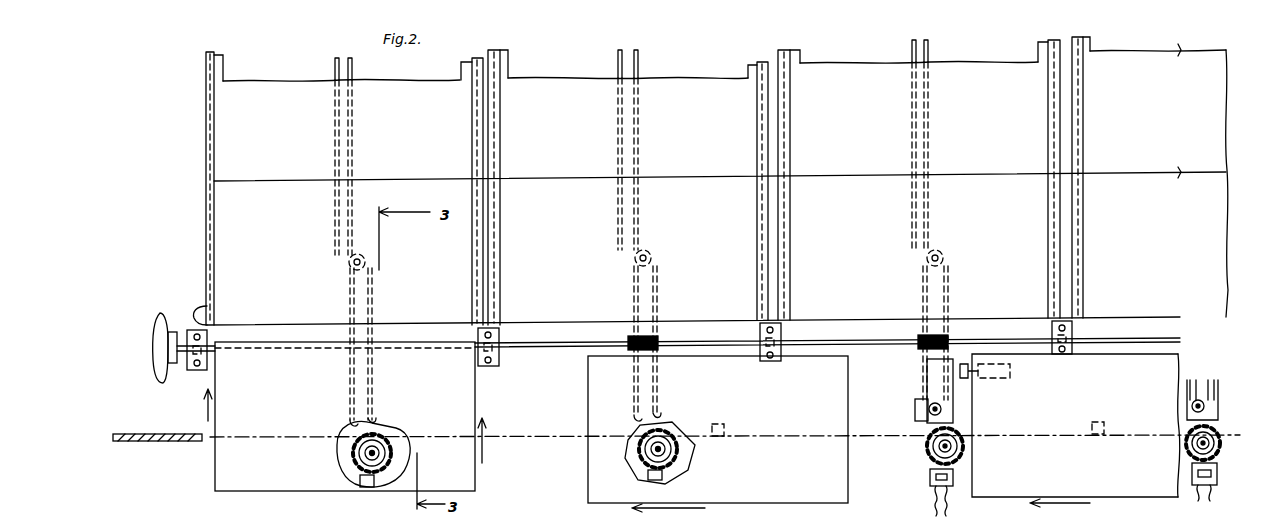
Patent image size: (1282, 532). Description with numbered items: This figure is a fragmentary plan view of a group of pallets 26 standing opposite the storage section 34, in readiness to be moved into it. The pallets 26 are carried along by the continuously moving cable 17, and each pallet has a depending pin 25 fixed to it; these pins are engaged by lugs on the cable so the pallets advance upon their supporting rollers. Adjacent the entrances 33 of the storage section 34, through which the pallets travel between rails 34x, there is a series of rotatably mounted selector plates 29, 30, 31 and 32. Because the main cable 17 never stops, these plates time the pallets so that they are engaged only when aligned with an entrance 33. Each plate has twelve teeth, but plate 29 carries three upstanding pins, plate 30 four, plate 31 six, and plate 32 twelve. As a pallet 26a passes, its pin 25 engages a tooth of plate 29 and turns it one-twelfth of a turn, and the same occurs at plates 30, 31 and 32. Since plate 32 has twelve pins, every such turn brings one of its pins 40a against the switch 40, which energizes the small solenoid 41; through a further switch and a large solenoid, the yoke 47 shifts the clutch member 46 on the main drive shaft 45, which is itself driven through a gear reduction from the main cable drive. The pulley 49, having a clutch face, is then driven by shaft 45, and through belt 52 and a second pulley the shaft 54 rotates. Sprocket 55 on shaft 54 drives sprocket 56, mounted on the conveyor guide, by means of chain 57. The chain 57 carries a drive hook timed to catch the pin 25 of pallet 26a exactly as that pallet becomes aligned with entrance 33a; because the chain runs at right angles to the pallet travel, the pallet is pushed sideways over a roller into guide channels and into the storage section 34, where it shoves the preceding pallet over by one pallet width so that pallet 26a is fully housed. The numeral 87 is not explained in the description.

The cable 17 is at (152, 433).
The pin 25 is at (350, 410).
The pallet 26 is at (345, 416).
The pallet 26a is at (297, 482).
The selector plate 29 is at (1176, 450).
The selector plate 30 is at (926, 450).
The selector plate 31 is at (684, 454).
The selector plate 32 is at (394, 430).
The entrance 33 is at (203, 248).
The entrance 33a is at (204, 318).
The storage section 34 is at (242, 212).
The rails 34x is at (502, 62).
The switch 40 is at (362, 488).
The pin 40a is at (342, 466).
The small solenoid 41 is at (974, 384).
The main drive shaft 45 is at (564, 342).
The clutch member 46 is at (636, 362).
The yoke 47 is at (622, 343).
The pulley 49 is at (666, 344).
The belt 52 is at (660, 337).
The shaft 54 is at (347, 266).
The sprocket 55 is at (358, 254).
The sprocket 56 is at (350, 390).
The chain 57 is at (384, 302).
The middle housing 87 is at (718, 444).